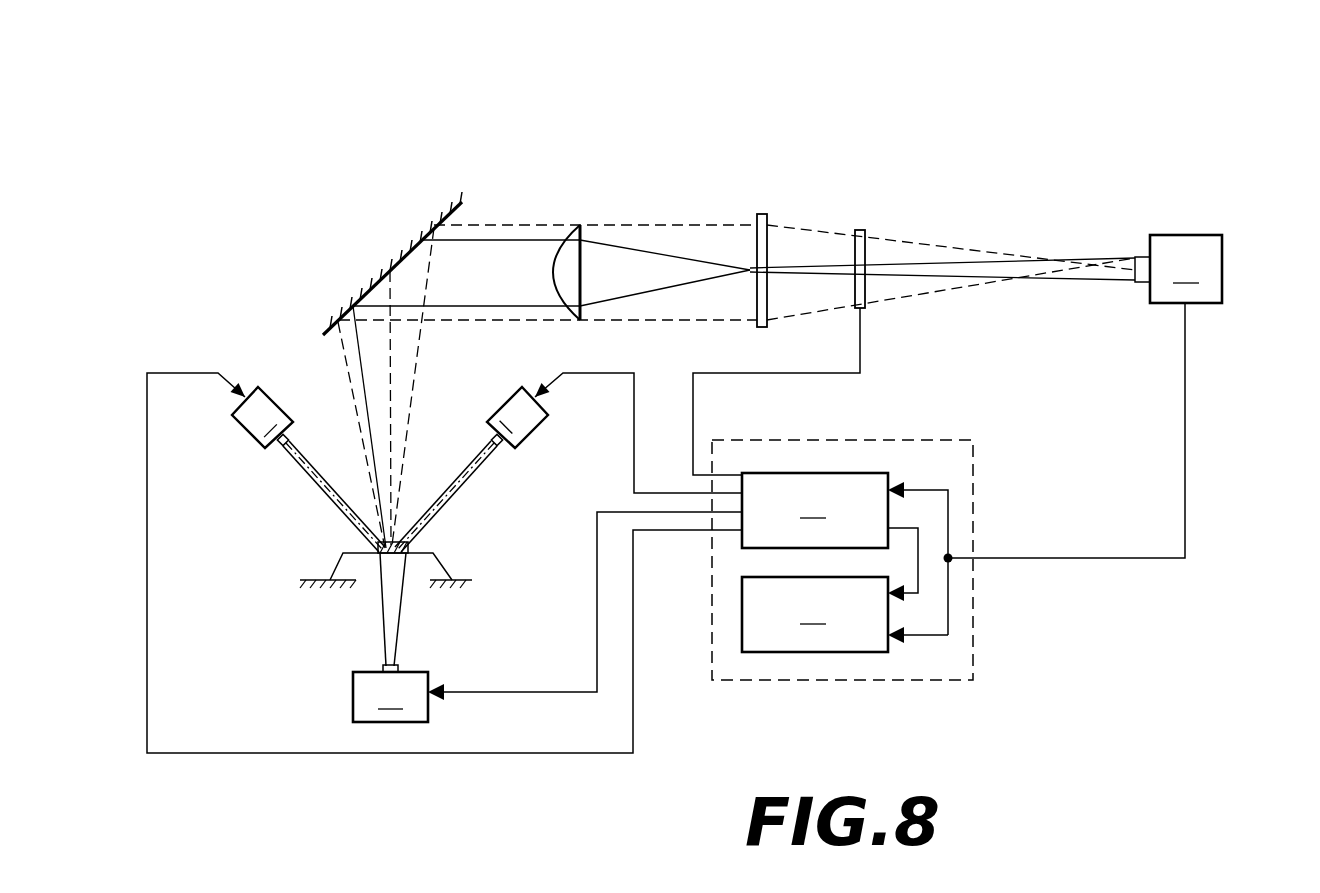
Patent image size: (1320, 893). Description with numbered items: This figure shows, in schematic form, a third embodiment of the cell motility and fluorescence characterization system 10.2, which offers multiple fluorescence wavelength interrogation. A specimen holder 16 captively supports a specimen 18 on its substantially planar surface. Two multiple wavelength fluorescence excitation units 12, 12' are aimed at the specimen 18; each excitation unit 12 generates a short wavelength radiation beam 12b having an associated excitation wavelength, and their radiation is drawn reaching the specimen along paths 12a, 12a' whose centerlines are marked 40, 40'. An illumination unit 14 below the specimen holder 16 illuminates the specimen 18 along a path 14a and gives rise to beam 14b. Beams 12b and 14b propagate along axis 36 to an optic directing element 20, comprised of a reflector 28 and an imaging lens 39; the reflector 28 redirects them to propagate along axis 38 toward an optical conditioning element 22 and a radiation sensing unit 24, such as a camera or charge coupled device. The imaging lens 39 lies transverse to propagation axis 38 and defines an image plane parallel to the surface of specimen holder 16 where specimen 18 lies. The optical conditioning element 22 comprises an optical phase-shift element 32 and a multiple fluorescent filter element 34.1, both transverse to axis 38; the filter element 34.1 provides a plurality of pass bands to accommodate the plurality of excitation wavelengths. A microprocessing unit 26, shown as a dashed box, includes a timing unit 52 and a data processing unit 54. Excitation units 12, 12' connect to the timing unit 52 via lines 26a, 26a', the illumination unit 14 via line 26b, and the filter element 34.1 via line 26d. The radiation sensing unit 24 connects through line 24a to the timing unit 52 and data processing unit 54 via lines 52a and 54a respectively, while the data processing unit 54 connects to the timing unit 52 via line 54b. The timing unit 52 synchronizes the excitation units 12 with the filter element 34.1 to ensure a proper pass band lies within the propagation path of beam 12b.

The cell motility and fluorescence characterization system 10.2 is at (968, 72).
The optic directing element 20 is at (533, 182).
The optical conditioning element 22 is at (818, 145).
The reflector 28 is at (326, 336).
The axis 36 is at (390, 371).
The short wavelength radiation beam 12b is at (357, 405).
The beam 14b is at (360, 372).
The propagation axis 38 is at (487, 288).
The imaging lens 39 is at (584, 320).
The optical phase-shift element 32 is at (757, 323).
The multiple fluorescent filter element 34.1 is at (862, 229).
The radiation sensing unit 24 is at (1178, 269).
The detector signal line 24a is at (1055, 558).
The microprocessing unit 26 is at (878, 682).
The timing unit 52 is at (815, 510).
The data processing unit 54 is at (815, 614).
The line 52a is at (958, 497).
The line 54a is at (948, 616).
The line 54b is at (940, 578).
The line 26d is at (693, 410).
The line 26a is at (638, 433).
The control line 26a' is at (444, 563).
The line 26b is at (532, 691).
The light source 12' is at (262, 417).
The fluorescence excitation unit 12 is at (517, 417).
The light beam 12a' is at (300, 496).
The beam axis 40' is at (325, 496).
The light beam 12a is at (465, 496).
The beam axis 40 is at (446, 496).
The specimen 18 is at (378, 545).
The specimen holder 16 is at (330, 578).
The light beam 14a is at (398, 630).
The illumination unit 14 is at (390, 693).